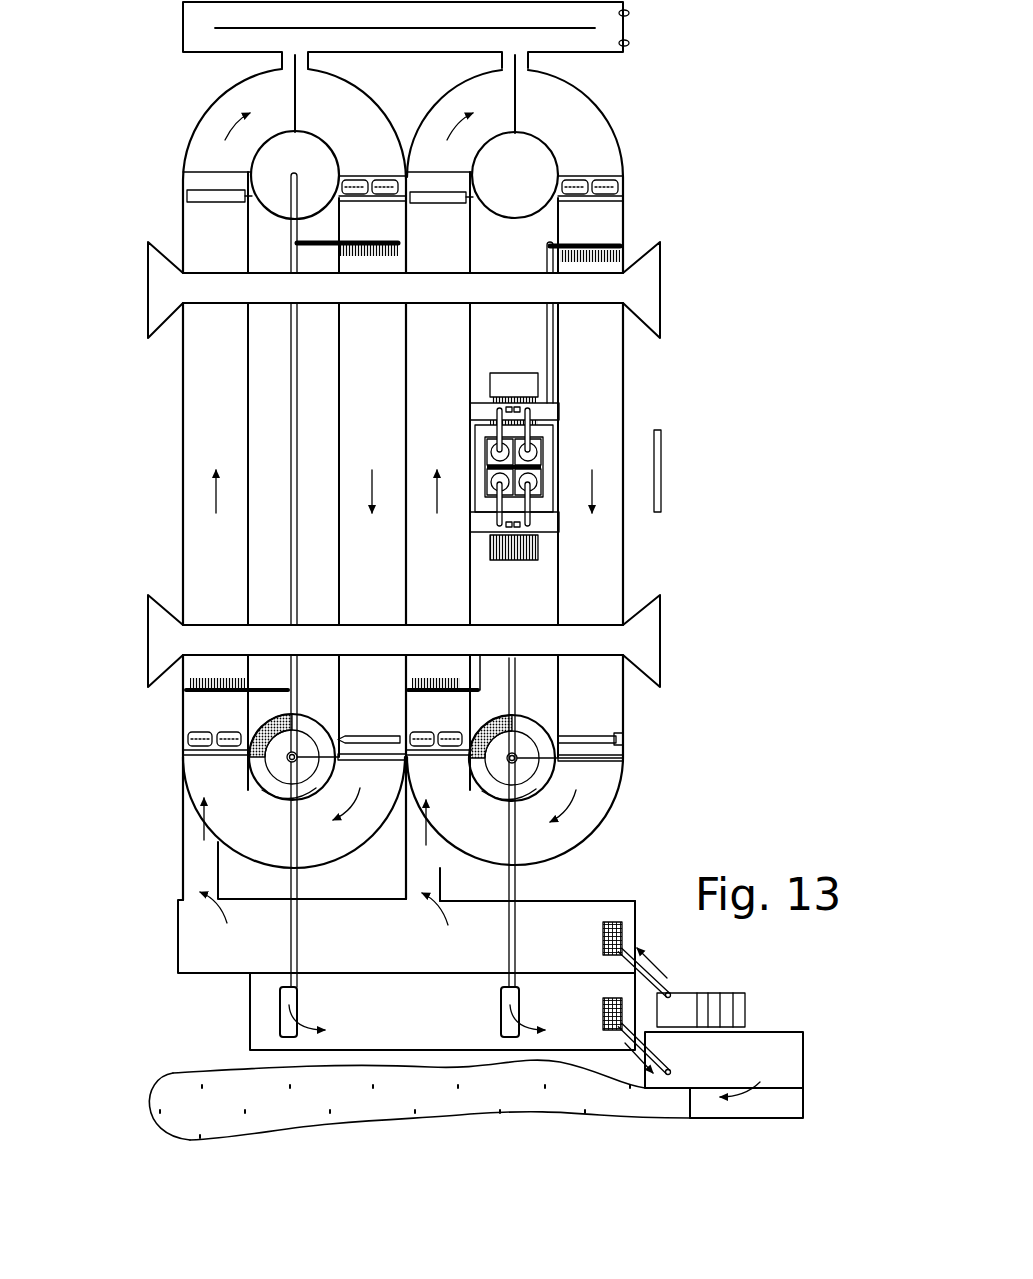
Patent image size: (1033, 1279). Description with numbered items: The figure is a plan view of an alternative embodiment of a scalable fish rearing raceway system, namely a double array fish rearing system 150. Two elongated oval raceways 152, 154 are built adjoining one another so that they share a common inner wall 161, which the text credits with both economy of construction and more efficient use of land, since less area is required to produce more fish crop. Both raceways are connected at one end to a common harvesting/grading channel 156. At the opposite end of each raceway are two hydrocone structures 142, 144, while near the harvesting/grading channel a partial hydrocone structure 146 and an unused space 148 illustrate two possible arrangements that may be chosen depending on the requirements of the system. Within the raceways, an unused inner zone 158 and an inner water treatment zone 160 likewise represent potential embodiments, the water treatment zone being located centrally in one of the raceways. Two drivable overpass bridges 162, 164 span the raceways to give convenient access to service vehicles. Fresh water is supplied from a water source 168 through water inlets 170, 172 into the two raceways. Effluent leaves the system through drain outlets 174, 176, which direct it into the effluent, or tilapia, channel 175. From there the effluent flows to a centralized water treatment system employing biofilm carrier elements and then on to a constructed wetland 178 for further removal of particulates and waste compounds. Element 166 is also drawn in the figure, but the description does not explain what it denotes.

The hydrocone structure 142 is at (277, 772).
The hydrocone structure 144 is at (530, 767).
The partial hydrocone structure 146 is at (272, 204).
The unused space 148 is at (548, 168).
The double array fish rearing system 150 is at (115, 88).
The elongated oval raceway 152 is at (162, 180).
The elongated oval raceway 154 is at (655, 112).
The common harvesting/grading channel 156 is at (610, 22).
The unused inner zone 158 is at (270, 425).
The inner water treatment zone 160 is at (527, 340).
The common inner wall 161 is at (406, 413).
The drivable overpass bridge 162 is at (645, 292).
The drivable overpass bridge 164 is at (640, 632).
The sensor 166 is at (661, 462).
The water source 168 is at (682, 1007).
The water inlet 170 is at (193, 883).
The water inlet 172 is at (440, 877).
The drain outlet 174 is at (285, 1002).
The effluent channel 175 is at (225, 995).
The drain outlet 176 is at (505, 1004).
The constructed wetland 178 is at (163, 1095).